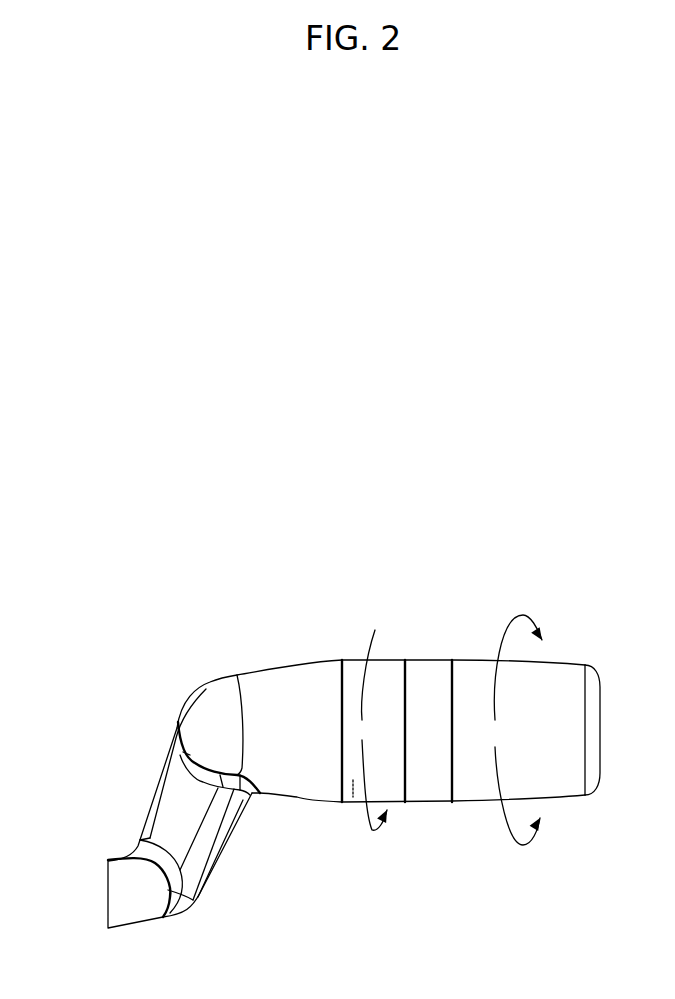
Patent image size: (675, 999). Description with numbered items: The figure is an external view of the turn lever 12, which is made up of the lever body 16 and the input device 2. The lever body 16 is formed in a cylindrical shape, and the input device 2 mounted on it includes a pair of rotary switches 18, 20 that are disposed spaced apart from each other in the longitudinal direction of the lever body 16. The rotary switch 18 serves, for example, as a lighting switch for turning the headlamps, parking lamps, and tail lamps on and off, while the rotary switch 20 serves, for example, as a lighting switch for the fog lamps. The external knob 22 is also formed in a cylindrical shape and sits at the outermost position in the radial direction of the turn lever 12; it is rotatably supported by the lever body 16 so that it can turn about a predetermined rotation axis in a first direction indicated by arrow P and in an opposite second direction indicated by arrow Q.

The turn lever 12 is at (371, 725).
The input device 2 is at (417, 648).
The lever body 16 is at (293, 783).
The rotary switch 18 is at (573, 798).
The rotary switch 20 is at (398, 805).
The external knob 22 is at (353, 803).
The arrow P is at (385, 652).
The arrow Q is at (367, 825).